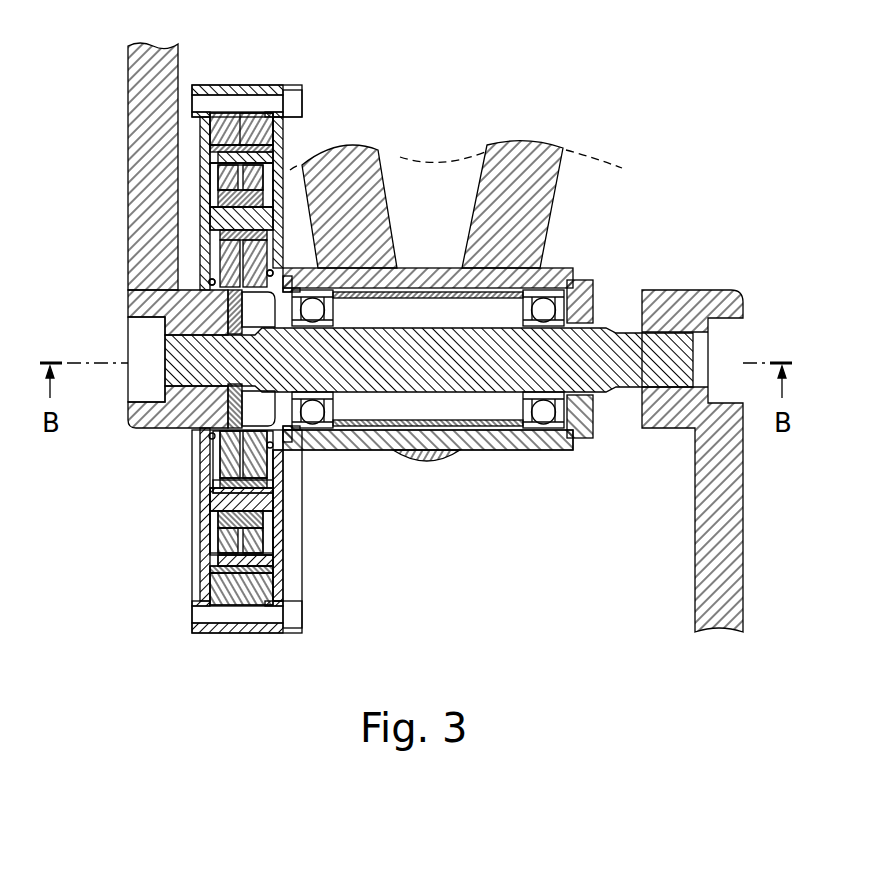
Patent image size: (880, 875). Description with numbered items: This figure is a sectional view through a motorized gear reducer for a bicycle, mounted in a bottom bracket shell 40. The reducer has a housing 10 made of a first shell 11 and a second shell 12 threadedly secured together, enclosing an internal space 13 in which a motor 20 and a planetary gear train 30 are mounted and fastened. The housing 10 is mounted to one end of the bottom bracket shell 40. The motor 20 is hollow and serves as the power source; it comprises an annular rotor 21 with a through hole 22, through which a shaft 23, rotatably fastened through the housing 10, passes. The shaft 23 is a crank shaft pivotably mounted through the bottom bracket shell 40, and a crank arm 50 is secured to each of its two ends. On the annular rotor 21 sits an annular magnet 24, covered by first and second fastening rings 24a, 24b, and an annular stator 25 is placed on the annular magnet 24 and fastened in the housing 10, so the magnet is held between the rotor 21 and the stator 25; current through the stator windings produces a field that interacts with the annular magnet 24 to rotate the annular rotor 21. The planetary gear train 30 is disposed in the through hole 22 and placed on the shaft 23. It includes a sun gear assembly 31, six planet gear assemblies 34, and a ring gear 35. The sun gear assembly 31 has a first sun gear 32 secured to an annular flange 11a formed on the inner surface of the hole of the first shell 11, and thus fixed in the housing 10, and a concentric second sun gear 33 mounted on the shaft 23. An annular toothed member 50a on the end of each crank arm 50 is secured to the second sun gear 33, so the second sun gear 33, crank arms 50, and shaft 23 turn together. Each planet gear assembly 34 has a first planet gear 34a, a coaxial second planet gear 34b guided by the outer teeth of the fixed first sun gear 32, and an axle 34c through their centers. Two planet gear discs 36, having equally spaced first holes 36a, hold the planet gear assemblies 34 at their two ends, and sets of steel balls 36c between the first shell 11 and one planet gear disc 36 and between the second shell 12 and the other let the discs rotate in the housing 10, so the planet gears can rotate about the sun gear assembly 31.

The housing 10 is at (228, 76).
The first shell 11 is at (285, 588).
The annular flange 11a is at (185, 366).
The second shell 12 is at (202, 587).
The internal space 13 is at (212, 243).
The motor 20 is at (281, 137).
The annular rotor 21 is at (213, 175).
The through hole 22 is at (202, 185).
The shaft 23 is at (466, 368).
The annular magnet 24 is at (212, 160).
The first fastening ring 24a is at (284, 575).
The second fastening ring 24b is at (204, 576).
The annular stator 25 is at (240, 115).
The planetary gear train 30 is at (288, 563).
The sun gear assembly 31 is at (351, 456).
The first sun gear 32 is at (258, 477).
The second sun gear 33 is at (258, 497).
The planet gear assembly 34 is at (118, 484).
The first planet gear 34a is at (212, 551).
The second planet gear 34b is at (212, 526).
The axle 34c is at (212, 500).
The ring gear 35 is at (258, 125).
The planet gear disc 36 is at (296, 552).
The first hole 36a is at (284, 503).
The steel balls 36c is at (210, 282).
The bottom bracket shell 40 is at (515, 195).
The crank arm 50 is at (150, 298).
The annular toothed member 50a is at (180, 425).